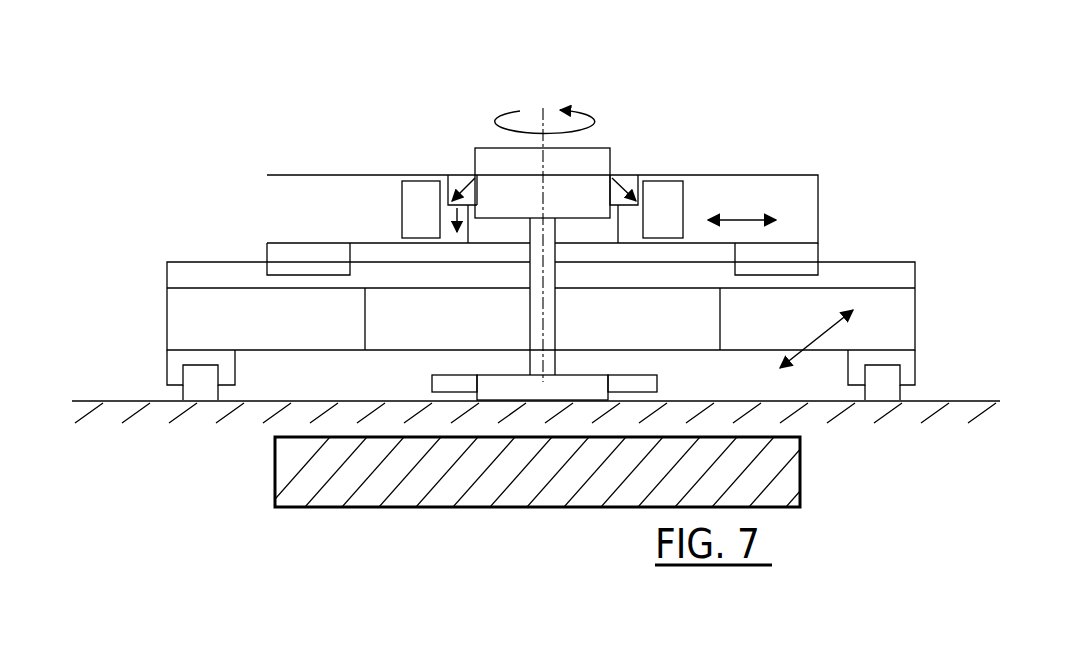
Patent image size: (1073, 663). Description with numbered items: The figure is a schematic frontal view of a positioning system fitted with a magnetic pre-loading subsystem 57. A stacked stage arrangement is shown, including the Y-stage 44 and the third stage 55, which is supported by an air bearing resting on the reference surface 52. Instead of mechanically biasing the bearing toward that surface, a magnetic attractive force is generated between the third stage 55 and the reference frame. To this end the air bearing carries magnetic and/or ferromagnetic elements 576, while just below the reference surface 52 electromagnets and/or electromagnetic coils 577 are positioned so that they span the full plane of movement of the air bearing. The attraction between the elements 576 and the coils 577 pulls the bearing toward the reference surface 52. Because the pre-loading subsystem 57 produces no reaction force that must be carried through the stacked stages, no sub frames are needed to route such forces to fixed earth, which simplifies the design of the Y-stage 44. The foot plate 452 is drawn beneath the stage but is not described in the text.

The Y-stage 44 is at (818, 203).
The reference surface 52 is at (985, 399).
The third stage 55 is at (597, 155).
The pre-loading subsystem 57 is at (425, 362).
The foot plate 452 is at (543, 383).
The magnetic and/or ferromagnetic elements 576 is at (457, 385).
The electromagnets and/or electromagnetic coils 577 is at (800, 483).